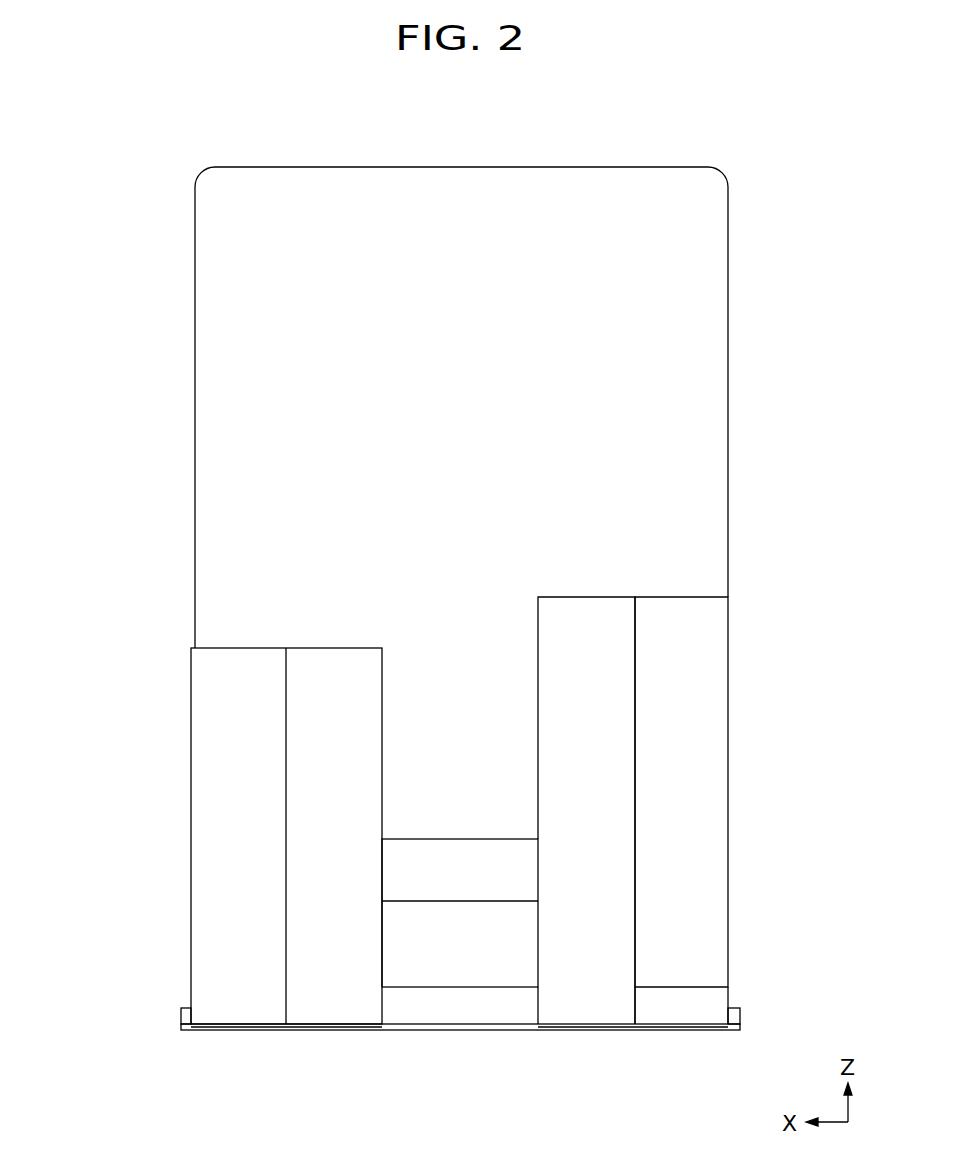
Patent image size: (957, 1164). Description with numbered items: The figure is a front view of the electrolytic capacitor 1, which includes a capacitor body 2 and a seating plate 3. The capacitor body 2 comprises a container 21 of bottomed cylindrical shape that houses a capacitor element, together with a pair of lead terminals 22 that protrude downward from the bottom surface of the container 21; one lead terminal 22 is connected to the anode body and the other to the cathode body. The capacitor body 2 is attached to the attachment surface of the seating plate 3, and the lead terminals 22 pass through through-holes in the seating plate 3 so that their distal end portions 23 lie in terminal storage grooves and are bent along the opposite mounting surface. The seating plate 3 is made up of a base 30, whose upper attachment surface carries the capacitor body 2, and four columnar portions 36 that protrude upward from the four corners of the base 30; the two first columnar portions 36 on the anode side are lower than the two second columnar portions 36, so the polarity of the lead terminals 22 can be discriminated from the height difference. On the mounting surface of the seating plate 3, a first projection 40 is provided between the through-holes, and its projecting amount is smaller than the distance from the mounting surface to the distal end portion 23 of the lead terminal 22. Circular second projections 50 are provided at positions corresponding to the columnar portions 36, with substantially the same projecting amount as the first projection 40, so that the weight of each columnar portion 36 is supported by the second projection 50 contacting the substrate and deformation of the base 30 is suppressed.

The electrolytic capacitor 1 is at (187, 303).
The capacitor body 2 is at (490, 407).
The container 21 is at (718, 489).
The seating plate 3 is at (731, 998).
The lead terminal 22 is at (181, 1022).
The distal end portion 23 is at (188, 1008).
The base 30 is at (555, 1012).
The columnar portion 36 is at (211, 735).
The first projection 40 is at (448, 1030).
The second projection 50 is at (273, 1028).